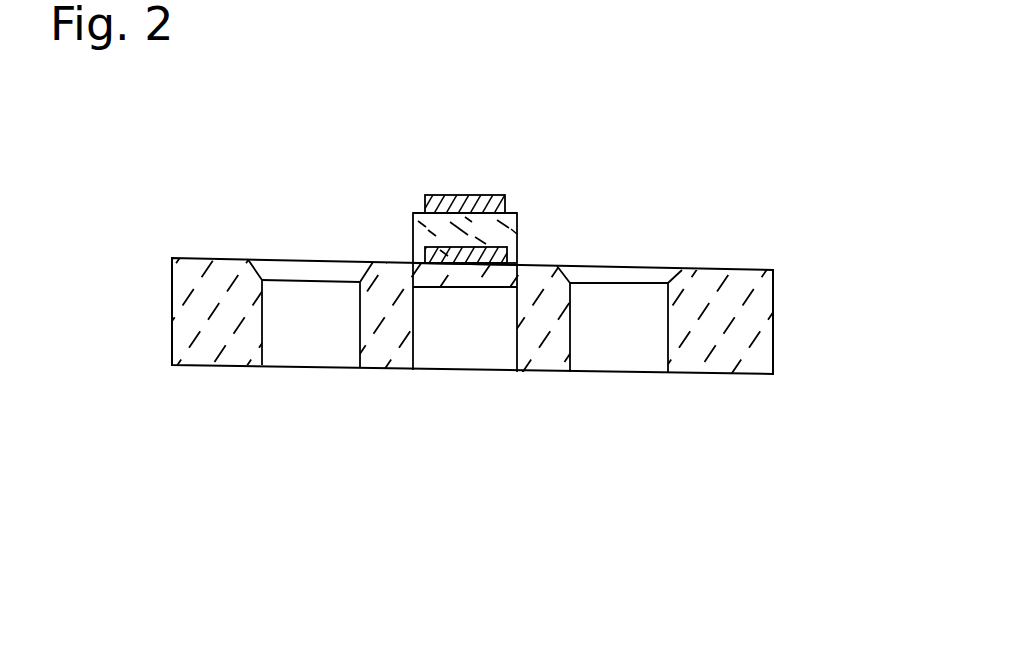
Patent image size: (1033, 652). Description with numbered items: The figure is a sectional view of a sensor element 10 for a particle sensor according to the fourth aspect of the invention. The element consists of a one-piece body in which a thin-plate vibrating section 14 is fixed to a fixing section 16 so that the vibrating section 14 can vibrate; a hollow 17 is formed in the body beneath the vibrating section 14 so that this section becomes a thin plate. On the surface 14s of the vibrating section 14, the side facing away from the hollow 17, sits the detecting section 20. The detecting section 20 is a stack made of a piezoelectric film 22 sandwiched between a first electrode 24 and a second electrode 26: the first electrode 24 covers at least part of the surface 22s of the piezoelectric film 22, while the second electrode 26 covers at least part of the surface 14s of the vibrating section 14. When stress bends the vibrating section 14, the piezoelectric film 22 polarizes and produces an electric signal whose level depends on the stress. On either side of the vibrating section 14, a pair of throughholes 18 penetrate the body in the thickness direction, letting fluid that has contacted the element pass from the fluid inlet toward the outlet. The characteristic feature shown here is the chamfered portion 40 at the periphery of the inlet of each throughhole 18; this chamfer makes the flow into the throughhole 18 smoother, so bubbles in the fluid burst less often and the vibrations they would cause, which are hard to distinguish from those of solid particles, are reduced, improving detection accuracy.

The semiconductor pressure sensor device 10 is at (784, 325).
The vibrating section 14 is at (472, 278).
The surface of the vibrating section 14s is at (438, 256).
The fixing section 16 is at (375, 355).
The hollow 17 is at (518, 337).
The throughhole 18 is at (668, 312).
The detecting section 20 is at (562, 180).
The piezoelectric film 22 is at (517, 220).
The surface of the piezoelectric film 22s is at (432, 197).
The first electrode 24 is at (503, 196).
The second electrode 26 is at (517, 241).
The chamfered portion 40 is at (262, 268).